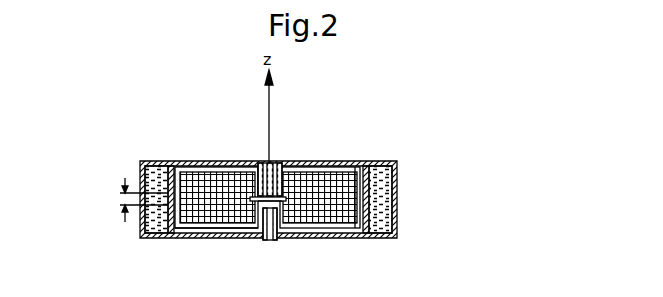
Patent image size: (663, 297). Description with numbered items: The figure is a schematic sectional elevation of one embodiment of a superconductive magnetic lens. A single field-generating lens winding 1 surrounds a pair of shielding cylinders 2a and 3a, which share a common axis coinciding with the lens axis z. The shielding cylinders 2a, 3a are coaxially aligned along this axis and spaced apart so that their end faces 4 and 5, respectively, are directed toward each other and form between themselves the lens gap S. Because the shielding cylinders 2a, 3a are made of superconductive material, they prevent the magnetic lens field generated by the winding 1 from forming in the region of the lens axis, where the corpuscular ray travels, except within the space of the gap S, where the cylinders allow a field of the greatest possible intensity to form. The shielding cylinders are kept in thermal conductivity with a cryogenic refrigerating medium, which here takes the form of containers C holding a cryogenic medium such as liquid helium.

The lens winding 1 is at (330, 208).
The shielding cylinder 2a is at (277, 163).
The shielding cylinder 3a is at (282, 236).
The end face 4 is at (255, 213).
The end face 5 is at (265, 199).
The container C is at (380, 186).
The lens gap S is at (135, 200).